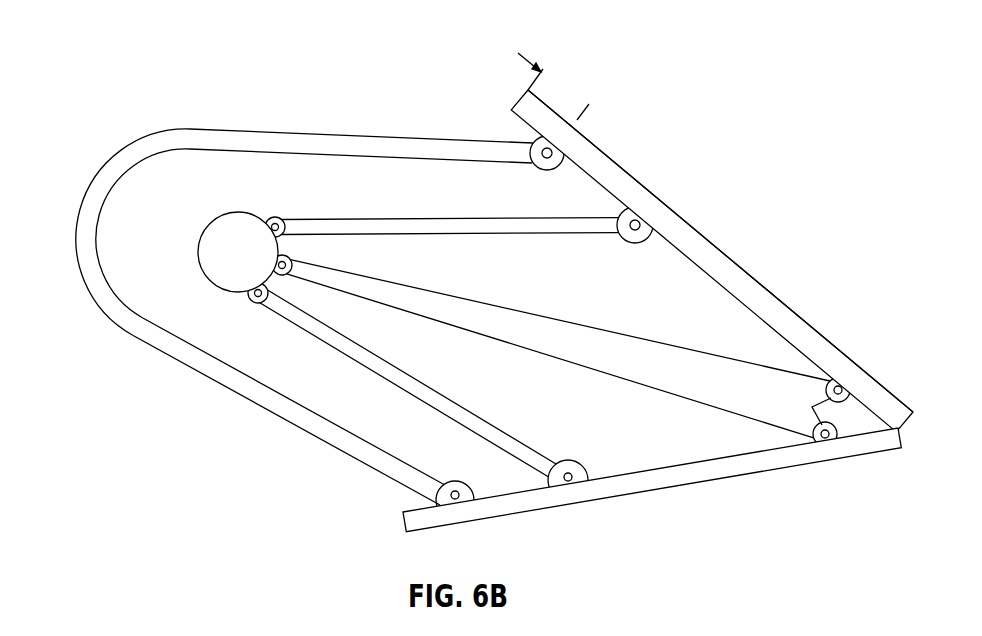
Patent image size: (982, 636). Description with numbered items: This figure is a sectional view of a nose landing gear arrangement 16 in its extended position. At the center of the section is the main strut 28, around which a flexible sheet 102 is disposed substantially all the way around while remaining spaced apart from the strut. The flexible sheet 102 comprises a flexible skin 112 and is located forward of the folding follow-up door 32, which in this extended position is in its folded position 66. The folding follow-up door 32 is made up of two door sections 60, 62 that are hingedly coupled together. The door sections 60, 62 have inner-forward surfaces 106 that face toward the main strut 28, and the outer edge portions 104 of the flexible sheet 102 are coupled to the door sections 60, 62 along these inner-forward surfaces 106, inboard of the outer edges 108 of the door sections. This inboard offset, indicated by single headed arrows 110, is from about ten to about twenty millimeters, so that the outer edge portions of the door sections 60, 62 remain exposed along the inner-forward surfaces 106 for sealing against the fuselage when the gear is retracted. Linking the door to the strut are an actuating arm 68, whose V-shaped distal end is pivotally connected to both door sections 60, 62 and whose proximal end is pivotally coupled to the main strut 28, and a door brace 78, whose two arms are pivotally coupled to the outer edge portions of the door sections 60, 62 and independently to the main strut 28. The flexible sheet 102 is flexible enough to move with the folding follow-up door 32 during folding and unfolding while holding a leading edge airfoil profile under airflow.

The nose landing gear arrangement 16 is at (172, 50).
The main strut 28 is at (210, 243).
The folding follow-up door 32 is at (844, 353).
The door section 60 is at (711, 481).
The door section 62 is at (701, 235).
The folded position 66 is at (621, 168).
The actuating arm 68 is at (483, 302).
The door brace 78 is at (337, 217).
The flexible sheet 102 is at (274, 299).
The outer edge portions 104 is at (436, 140).
The inner-forward surfaces 106 is at (702, 271).
The outer edges 108 is at (527, 105).
The single headed arrows 110 is at (585, 110).
The flexible skin 112 is at (185, 127).